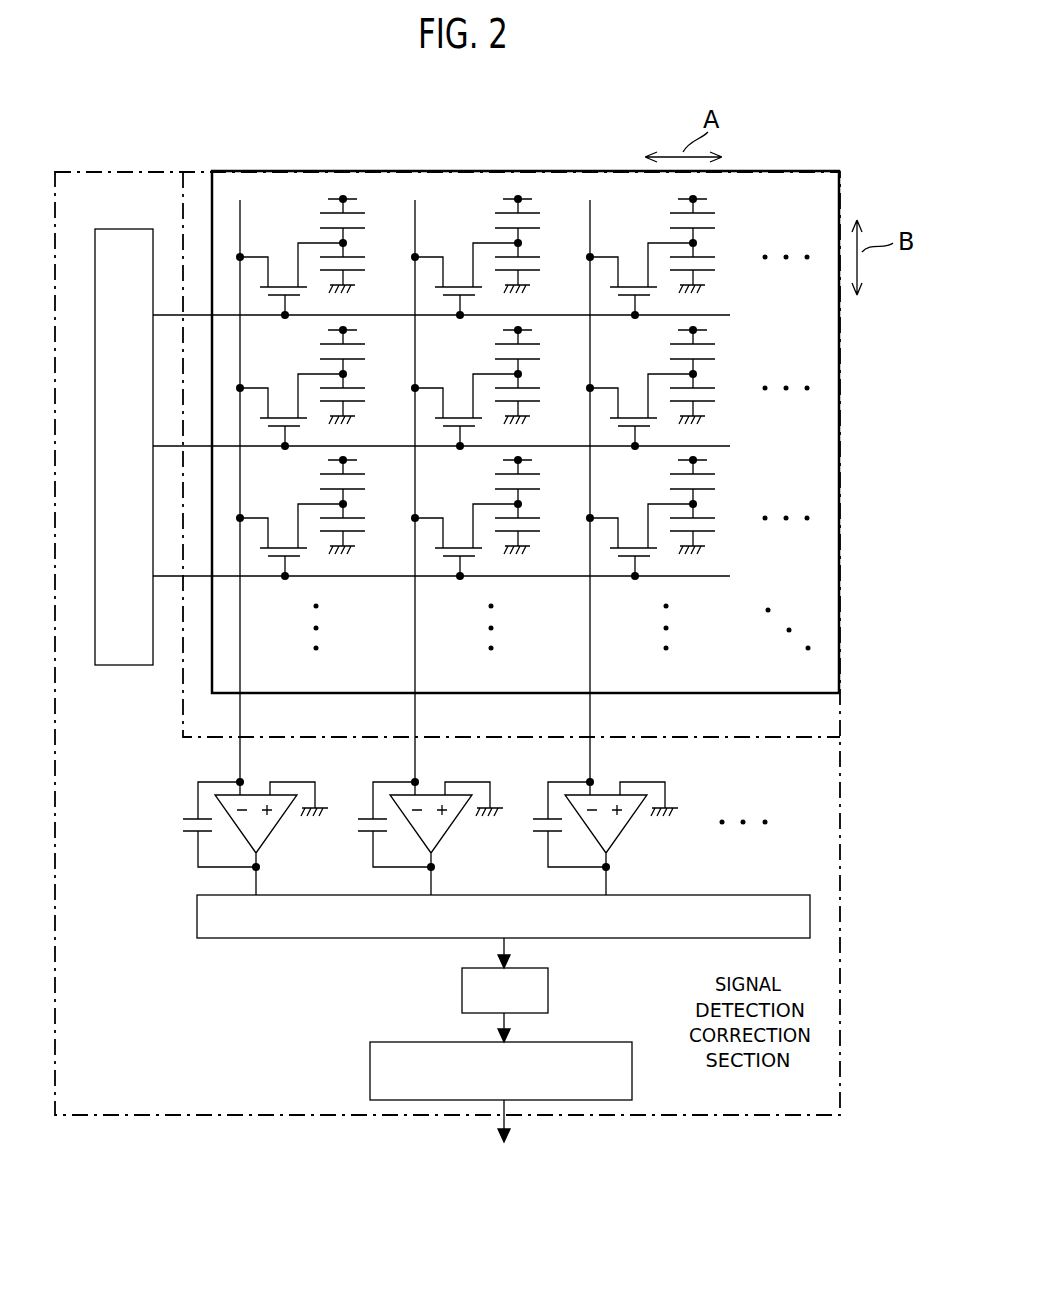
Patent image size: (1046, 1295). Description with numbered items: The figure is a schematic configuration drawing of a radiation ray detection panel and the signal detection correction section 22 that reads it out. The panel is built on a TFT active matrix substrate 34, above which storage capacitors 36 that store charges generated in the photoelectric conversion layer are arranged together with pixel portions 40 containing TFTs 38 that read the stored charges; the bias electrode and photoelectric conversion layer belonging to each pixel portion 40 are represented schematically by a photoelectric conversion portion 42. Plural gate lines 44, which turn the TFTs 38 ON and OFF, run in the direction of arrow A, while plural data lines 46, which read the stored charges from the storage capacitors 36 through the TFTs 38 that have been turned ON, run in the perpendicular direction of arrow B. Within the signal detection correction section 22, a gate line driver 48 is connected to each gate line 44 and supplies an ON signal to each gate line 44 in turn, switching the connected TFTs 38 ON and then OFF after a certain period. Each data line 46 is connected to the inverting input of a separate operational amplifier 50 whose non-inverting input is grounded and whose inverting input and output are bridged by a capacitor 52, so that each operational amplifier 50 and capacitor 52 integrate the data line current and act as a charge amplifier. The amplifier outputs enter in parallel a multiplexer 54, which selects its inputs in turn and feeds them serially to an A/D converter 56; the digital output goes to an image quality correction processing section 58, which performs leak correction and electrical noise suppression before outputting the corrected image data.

The signal detection correction section 22 is at (195, 1117).
The TFT active matrix substrate 34 is at (797, 170).
The storage capacitor 36 is at (539, 402).
The TFT 38 is at (466, 398).
The pixel portion 40 is at (666, 481).
The photoelectric conversion portion 42 is at (539, 353).
The gate line 44 is at (730, 315).
The data line 46 is at (241, 640).
The gate line driver 48 is at (124, 229).
The operational amplifier 50 is at (446, 838).
The capacitor 52 is at (374, 813).
The multiplexer 54 is at (197, 912).
The A/D converter 56 is at (462, 990).
The image quality correction processing section 58 is at (370, 1070).